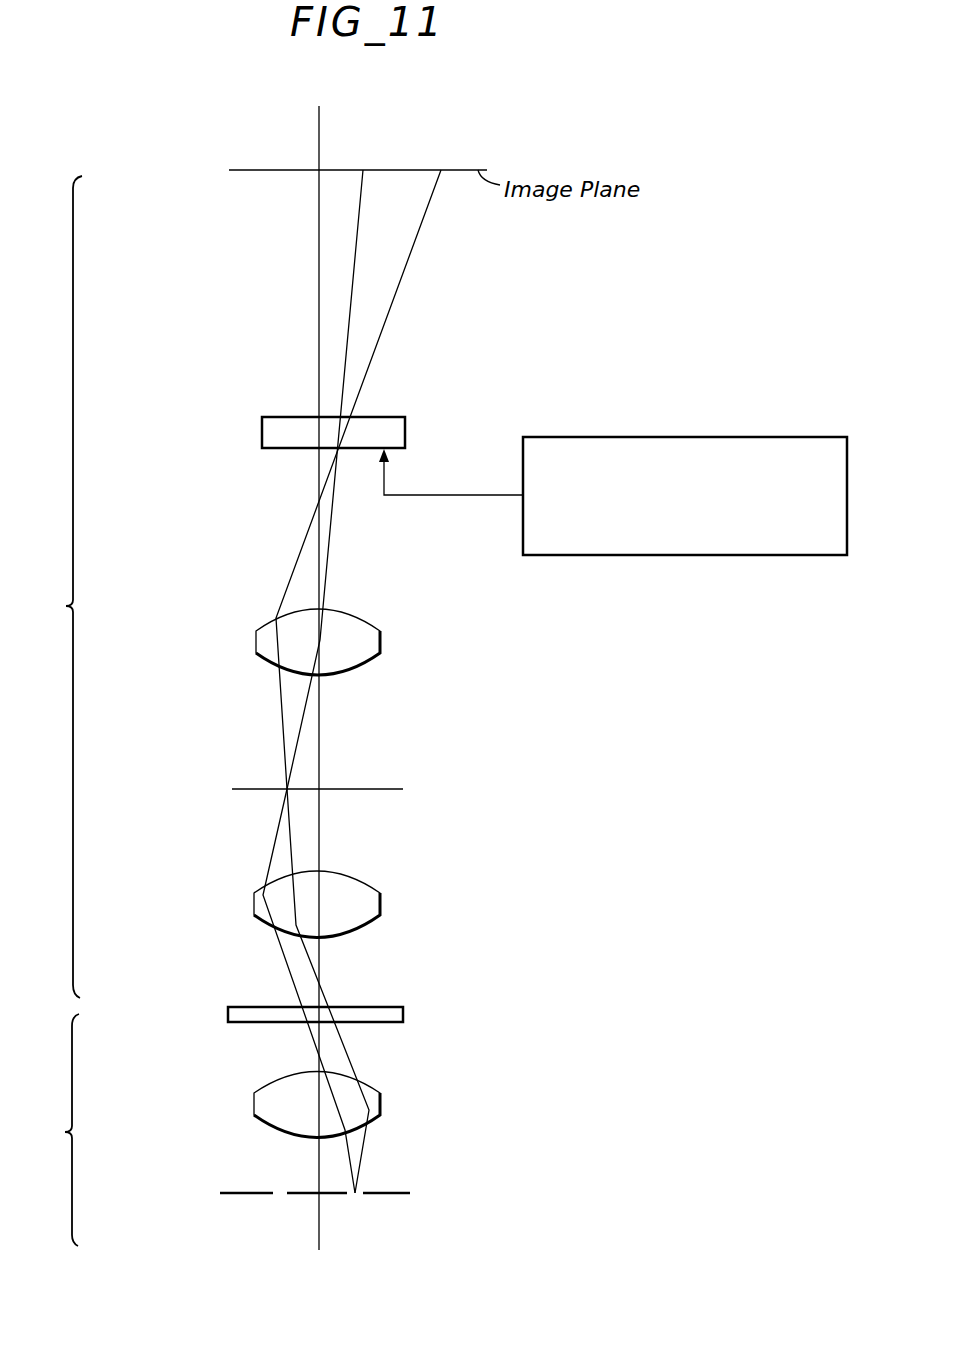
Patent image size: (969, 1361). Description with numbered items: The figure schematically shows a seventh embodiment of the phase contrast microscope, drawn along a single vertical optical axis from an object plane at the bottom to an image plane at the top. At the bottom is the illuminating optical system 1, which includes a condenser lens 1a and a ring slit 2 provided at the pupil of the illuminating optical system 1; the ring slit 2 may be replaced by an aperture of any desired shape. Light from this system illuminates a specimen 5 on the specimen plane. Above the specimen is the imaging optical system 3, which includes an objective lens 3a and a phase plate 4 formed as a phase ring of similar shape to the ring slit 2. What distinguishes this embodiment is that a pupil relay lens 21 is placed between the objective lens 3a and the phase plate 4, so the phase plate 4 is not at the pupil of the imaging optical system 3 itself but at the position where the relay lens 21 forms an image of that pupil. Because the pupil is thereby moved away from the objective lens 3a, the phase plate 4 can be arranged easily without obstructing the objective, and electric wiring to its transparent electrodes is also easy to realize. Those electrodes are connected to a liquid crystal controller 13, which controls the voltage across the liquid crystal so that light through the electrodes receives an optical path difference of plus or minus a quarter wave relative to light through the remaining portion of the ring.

The illuminating optical system 1 is at (64, 1130).
The condenser lens 1a is at (254, 1105).
The ring slit 2 is at (383, 1193).
The imaging optical system 3 is at (62, 587).
The objective lens 3a is at (254, 900).
The phase plate 4 is at (262, 435).
The specimen 5 is at (228, 1014).
The liquid crystal controller 13 is at (674, 437).
The pupil relay lens 21 is at (256, 642).